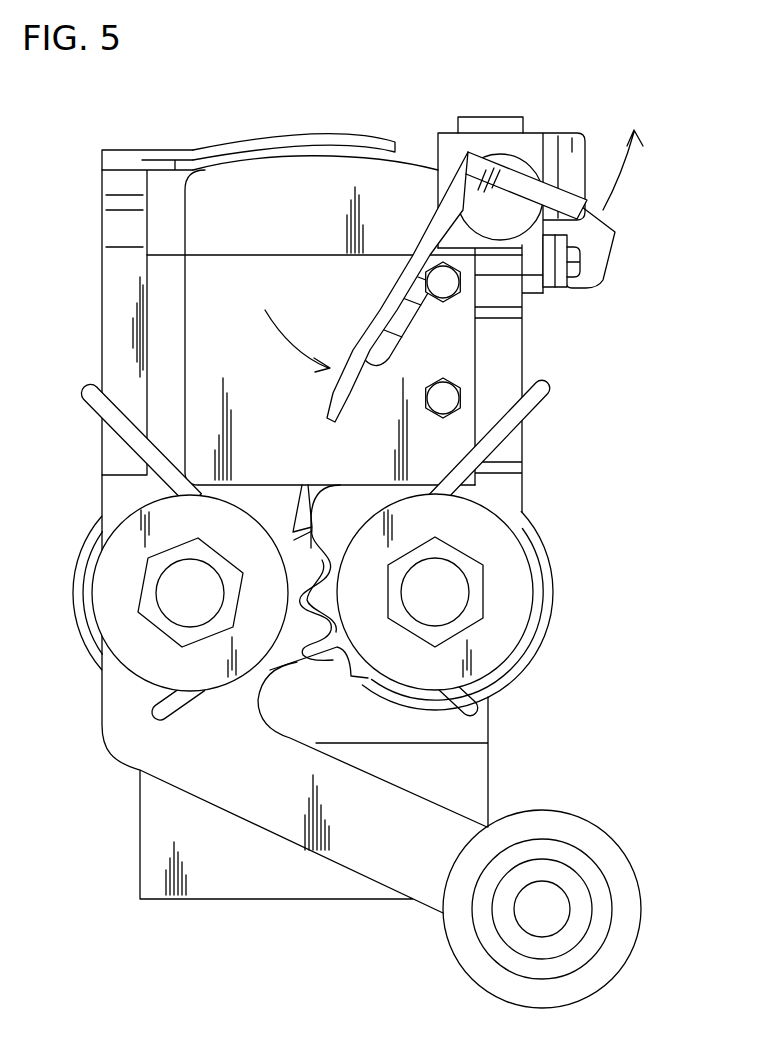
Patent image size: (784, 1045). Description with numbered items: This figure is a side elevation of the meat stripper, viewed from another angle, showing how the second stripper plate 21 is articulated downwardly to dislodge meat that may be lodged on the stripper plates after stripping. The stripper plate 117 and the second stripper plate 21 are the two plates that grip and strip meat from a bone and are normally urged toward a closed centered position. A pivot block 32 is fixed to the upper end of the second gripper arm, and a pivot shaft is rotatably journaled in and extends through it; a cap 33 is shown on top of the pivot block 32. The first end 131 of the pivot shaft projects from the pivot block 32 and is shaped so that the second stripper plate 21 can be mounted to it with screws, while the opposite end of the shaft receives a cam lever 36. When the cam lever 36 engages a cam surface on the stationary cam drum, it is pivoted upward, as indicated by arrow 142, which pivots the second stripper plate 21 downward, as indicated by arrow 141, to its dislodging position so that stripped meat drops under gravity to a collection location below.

The stripper plate 117 is at (217, 142).
The pivot block 32 is at (448, 103).
The housing cap 33 is at (503, 116).
The first end of the pivot shaft 131 is at (498, 198).
The arrow indicating upward pivoting motion of the cam lever 142 is at (632, 160).
The cam lever 36 is at (606, 212).
The second stripper plate 21 is at (380, 312).
The arrow indicating downward pivoting motion of the second stripper plate 141 is at (288, 337).